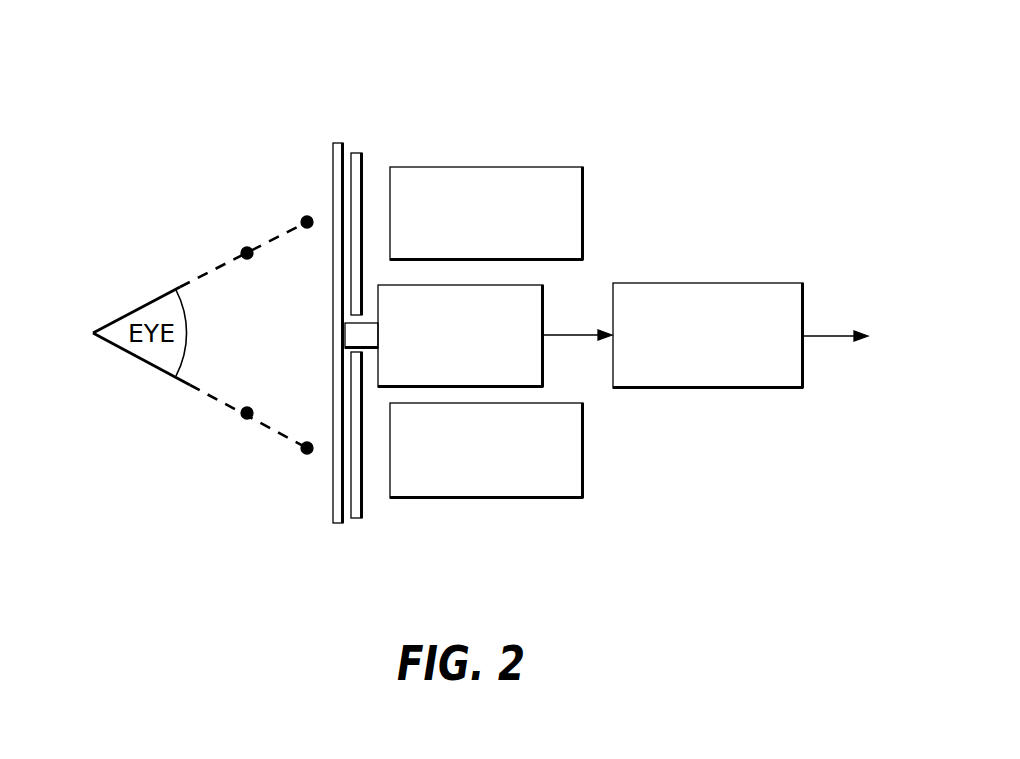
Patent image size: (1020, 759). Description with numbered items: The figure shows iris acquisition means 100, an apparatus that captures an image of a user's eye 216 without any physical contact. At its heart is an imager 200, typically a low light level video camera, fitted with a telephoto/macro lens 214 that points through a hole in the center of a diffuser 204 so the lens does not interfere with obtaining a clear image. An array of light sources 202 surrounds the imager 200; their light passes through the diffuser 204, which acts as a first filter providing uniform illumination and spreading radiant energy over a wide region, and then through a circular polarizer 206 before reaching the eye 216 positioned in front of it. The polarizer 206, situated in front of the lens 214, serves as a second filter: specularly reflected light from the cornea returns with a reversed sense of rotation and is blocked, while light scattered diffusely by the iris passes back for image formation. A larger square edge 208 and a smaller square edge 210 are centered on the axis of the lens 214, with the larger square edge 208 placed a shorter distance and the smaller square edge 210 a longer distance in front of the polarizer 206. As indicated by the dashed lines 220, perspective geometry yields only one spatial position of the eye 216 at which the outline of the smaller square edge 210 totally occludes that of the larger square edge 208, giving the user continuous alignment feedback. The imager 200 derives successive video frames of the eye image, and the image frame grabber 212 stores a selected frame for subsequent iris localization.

The iris acquisition means 100 is at (528, 146).
The imager 200 is at (478, 364).
The array of light sources 202 is at (503, 493).
The diffuser 204 is at (363, 167).
The circular polarizer 206 is at (343, 523).
The larger square edge 208 is at (305, 220).
The smaller square edge 210 is at (243, 252).
The image frame grabber 212 is at (727, 373).
The telephoto/macro lens 214 is at (352, 333).
The eye 216 is at (192, 336).
The dashed lines 220 is at (213, 272).